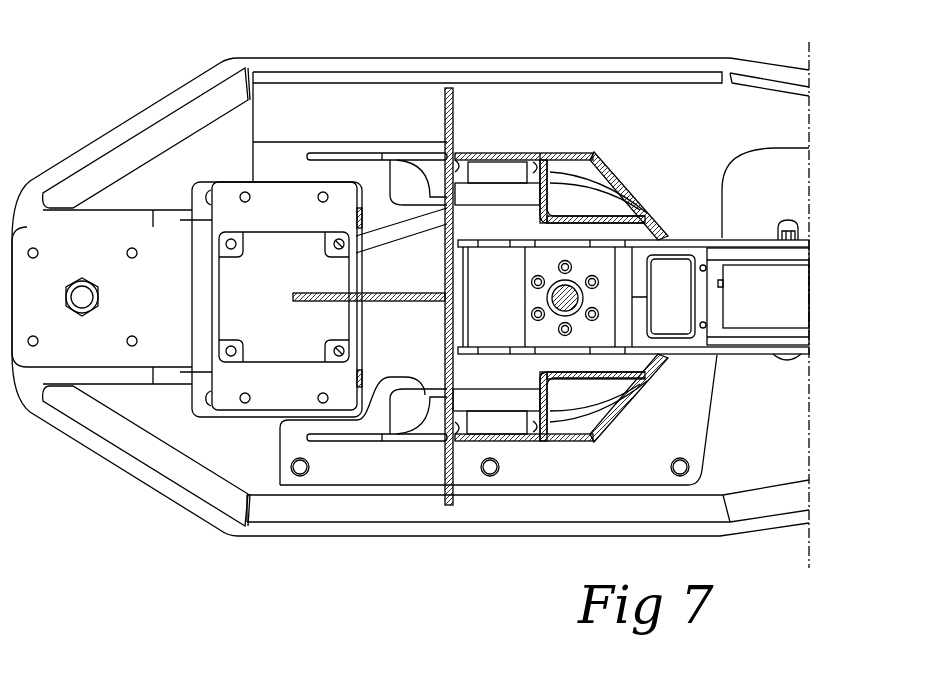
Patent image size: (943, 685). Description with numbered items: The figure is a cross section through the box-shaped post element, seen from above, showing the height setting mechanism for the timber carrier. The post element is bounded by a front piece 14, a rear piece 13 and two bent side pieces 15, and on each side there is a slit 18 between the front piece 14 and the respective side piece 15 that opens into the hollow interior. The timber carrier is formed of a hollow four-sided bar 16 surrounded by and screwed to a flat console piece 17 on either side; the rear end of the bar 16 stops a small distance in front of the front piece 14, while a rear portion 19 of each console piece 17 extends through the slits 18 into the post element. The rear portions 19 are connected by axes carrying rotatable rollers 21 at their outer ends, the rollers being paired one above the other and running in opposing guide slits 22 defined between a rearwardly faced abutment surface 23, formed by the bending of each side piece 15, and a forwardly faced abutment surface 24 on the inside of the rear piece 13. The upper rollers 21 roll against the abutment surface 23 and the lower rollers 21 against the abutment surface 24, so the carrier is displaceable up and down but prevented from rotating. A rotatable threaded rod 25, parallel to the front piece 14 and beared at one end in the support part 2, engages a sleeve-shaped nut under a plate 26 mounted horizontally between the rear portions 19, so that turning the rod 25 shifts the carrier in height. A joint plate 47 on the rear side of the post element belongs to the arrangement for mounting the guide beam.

The support part 2 is at (708, 107).
The rear piece 13 is at (445, 103).
The front piece 14 is at (688, 313).
The side piece 15 is at (577, 153).
The bar 16 is at (718, 298).
The console piece 17 is at (763, 240).
The slit 18 is at (667, 233).
The rear portion 19 is at (688, 241).
The roller 21 is at (487, 193).
The guide slit 22 is at (530, 167).
The rearwardly faced abutment surface 23 is at (540, 167).
The forwardly faced abutment surface 24 is at (457, 158).
The threaded rod 25 is at (565, 295).
The plate 26 is at (277, 253).
The joint plate 47 is at (325, 303).